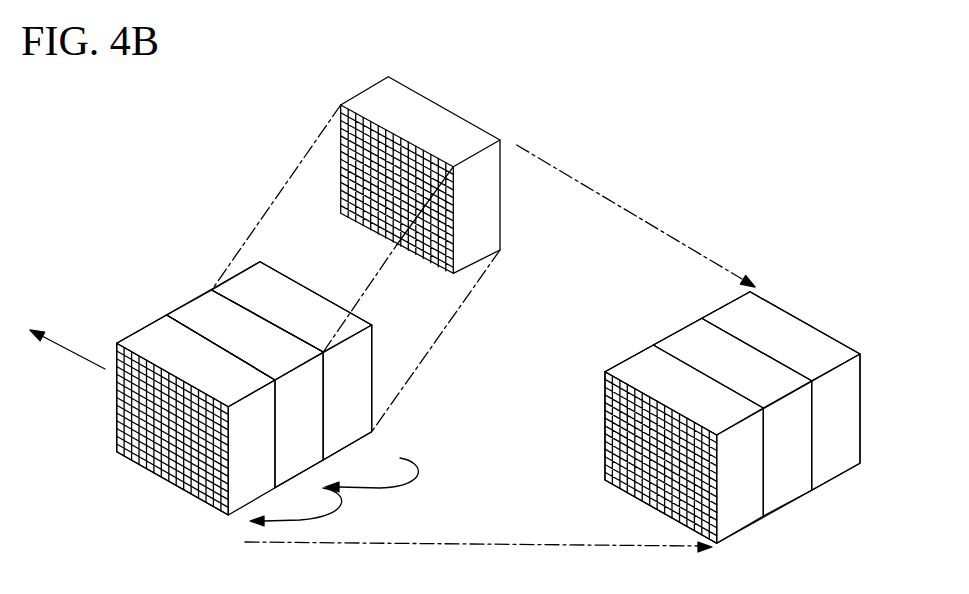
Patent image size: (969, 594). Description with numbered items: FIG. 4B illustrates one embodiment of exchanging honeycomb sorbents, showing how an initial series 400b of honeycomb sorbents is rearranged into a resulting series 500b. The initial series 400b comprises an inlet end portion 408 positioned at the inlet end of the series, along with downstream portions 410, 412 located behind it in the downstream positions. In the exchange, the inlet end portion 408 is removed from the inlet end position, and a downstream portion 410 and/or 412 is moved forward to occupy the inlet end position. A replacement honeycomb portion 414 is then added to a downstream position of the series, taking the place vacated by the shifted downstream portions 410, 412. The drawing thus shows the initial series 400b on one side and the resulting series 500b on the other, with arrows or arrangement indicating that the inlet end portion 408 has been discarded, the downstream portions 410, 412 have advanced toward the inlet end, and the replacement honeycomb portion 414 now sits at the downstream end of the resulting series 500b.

The initial series 400b is at (192, 242).
The inlet end portion 408 is at (152, 338).
The downstream portion 410 is at (305, 430).
The downstream portion 412 is at (352, 371).
The replacement honeycomb portion 414 is at (433, 118).
The resulting series 500b is at (792, 298).